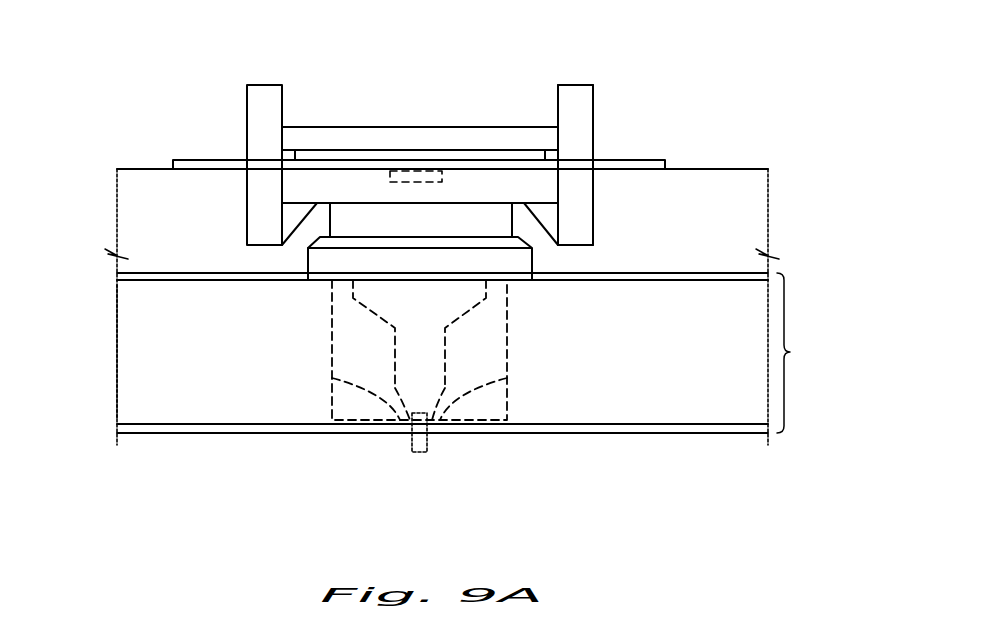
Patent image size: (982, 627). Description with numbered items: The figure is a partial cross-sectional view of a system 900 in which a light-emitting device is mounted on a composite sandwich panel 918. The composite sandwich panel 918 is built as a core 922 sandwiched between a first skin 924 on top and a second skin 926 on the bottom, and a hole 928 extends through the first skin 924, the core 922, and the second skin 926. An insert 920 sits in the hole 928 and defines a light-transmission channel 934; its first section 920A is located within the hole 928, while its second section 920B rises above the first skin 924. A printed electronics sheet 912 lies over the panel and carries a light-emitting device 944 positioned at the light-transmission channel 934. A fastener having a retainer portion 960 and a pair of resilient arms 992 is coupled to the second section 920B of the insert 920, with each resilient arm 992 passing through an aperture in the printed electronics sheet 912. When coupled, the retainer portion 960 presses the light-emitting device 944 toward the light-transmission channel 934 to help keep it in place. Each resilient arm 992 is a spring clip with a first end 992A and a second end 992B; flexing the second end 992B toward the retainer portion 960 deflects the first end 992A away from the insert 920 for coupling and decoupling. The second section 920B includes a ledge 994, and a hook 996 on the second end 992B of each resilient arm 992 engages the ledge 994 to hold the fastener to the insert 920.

The system 900 is at (781, 55).
The printed electronics sheet 912 is at (713, 168).
The composite sandwich panel 918 is at (806, 353).
The insert 920 is at (506, 263).
The first section 920A is at (507, 302).
The second section 920B is at (308, 260).
The core 922 is at (120, 311).
The first skin 924 is at (117, 273).
The second skin 926 is at (117, 428).
The hole 928 is at (332, 408).
The light-transmission channel 934 is at (436, 423).
The light-emitting device 944 is at (423, 171).
The retainer portion 960 is at (328, 127).
The resilient arms 992 is at (247, 189).
The first end 992A is at (585, 247).
The second end 992B is at (577, 85).
The ledge 994 is at (545, 200).
The hook 996 is at (538, 217).